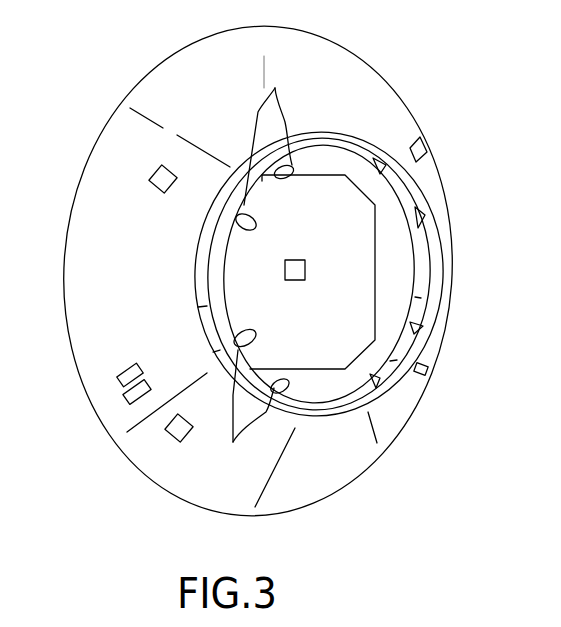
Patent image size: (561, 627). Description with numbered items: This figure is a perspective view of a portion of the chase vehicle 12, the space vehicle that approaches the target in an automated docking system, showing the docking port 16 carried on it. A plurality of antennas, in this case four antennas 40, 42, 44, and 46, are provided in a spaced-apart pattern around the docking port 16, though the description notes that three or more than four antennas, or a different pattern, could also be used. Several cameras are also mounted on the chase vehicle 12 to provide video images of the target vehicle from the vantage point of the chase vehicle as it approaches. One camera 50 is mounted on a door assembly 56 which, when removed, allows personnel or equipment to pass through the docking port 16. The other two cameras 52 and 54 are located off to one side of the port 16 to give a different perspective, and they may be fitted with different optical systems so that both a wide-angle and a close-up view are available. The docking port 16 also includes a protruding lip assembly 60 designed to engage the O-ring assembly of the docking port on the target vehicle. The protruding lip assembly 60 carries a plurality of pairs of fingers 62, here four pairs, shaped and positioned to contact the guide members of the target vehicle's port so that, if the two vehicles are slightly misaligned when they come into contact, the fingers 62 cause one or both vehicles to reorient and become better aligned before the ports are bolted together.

The chase vehicle 12 is at (386, 34).
The docking port 16 is at (176, 297).
The antenna 40 is at (160, 168).
The antenna 42 is at (430, 143).
The antenna 44 is at (173, 427).
The antenna 46 is at (428, 368).
The camera 50 is at (305, 268).
The camera 52 is at (126, 378).
The camera 54 is at (128, 401).
The door assembly 56 is at (320, 318).
The protruding lip assembly 60 is at (204, 266).
The fingers 62 is at (420, 441).